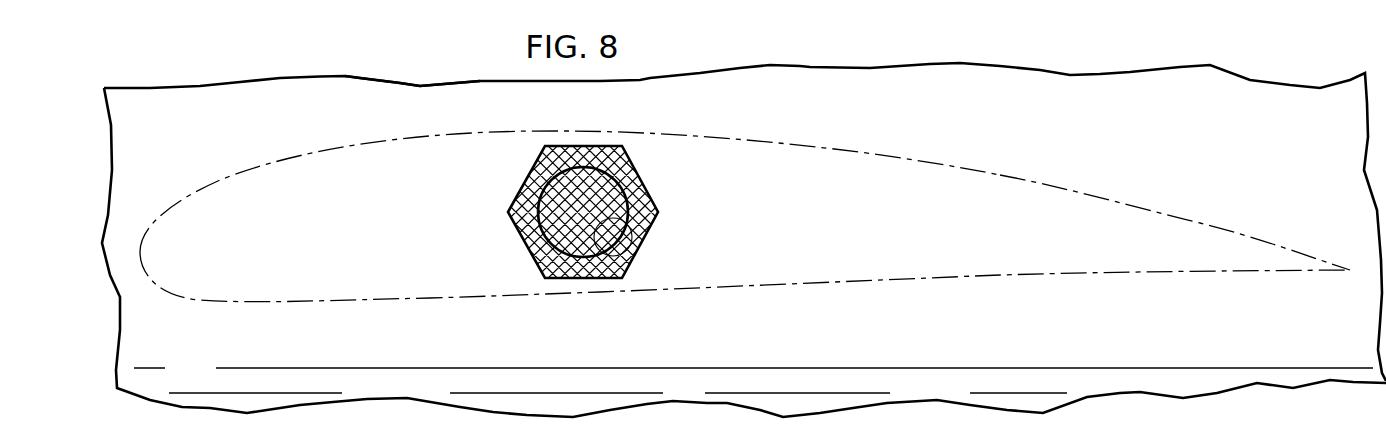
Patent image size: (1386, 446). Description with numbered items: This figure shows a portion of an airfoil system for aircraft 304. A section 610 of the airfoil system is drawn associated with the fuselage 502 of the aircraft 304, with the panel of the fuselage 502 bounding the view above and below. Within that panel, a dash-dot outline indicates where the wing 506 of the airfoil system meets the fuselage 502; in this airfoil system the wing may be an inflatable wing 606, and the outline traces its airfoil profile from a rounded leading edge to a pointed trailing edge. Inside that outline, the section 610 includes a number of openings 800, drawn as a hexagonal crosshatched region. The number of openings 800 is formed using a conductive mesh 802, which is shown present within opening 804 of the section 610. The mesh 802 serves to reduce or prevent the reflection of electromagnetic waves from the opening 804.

The aircraft 304 is at (1258, 78).
The fuselage 502 is at (418, 98).
The wing 506 is at (1046, 184).
The inflatable wing 606 is at (1053, 261).
The section 610 is at (890, 157).
The number of openings 800 is at (513, 247).
The mesh 802 is at (527, 184).
The opening 804 is at (640, 229).